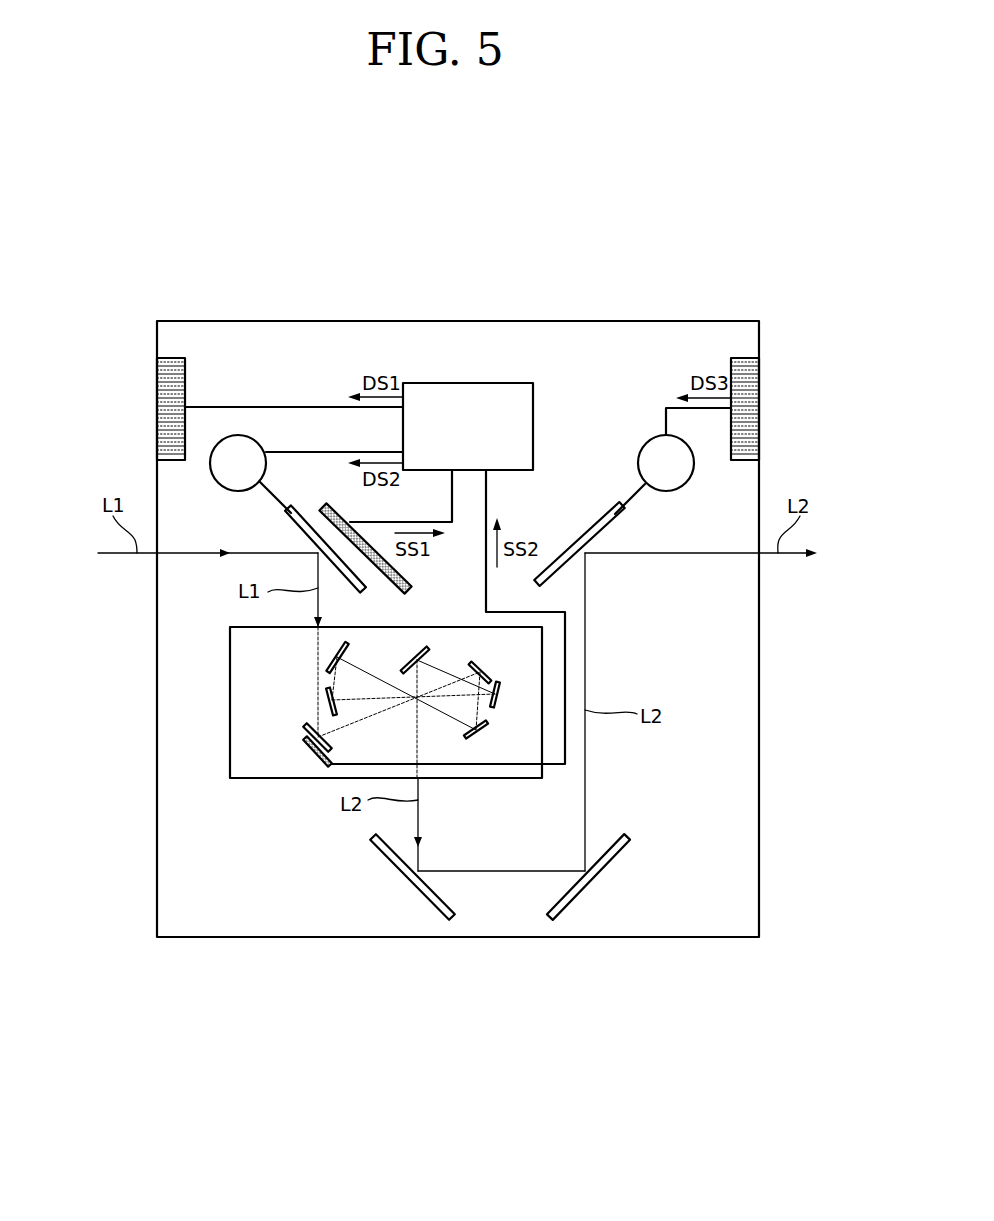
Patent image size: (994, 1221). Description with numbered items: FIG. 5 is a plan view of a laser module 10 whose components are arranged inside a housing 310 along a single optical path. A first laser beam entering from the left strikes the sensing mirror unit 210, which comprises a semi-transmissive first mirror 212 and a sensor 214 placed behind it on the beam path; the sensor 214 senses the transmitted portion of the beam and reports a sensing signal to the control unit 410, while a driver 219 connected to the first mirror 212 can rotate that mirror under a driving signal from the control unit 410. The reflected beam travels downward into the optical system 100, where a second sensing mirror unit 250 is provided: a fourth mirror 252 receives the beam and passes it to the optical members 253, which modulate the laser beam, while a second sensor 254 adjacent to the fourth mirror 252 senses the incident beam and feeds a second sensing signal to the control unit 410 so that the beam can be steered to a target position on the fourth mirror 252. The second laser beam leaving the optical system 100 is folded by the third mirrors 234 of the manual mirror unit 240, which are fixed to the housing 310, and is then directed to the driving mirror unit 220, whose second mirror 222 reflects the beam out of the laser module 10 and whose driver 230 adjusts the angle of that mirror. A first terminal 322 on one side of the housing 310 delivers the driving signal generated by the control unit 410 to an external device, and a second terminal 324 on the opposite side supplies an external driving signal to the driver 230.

The laser module 10 is at (748, 223).
The optical system 100 is at (230, 690).
The sensing mirror unit 210 is at (370, 262).
The first mirror 212 is at (294, 516).
The sensor 214 is at (333, 516).
The driver of the sensing mirror unit 219 is at (240, 458).
The driving mirror unit 220 is at (685, 262).
The second mirror 222 is at (591, 533).
The driver 230 is at (653, 450).
The third mirrors 234 is at (432, 897).
The manual mirror unit 240 is at (405, 1000).
The second sensing mirror unit 250 is at (88, 710).
The fourth mirror 252 is at (306, 728).
The optical members 253 is at (336, 653).
The second sensor 254 is at (318, 762).
The housing 310 is at (480, 321).
The first terminal 322 is at (168, 398).
The second terminal 324 is at (750, 398).
The control unit 410 is at (449, 441).